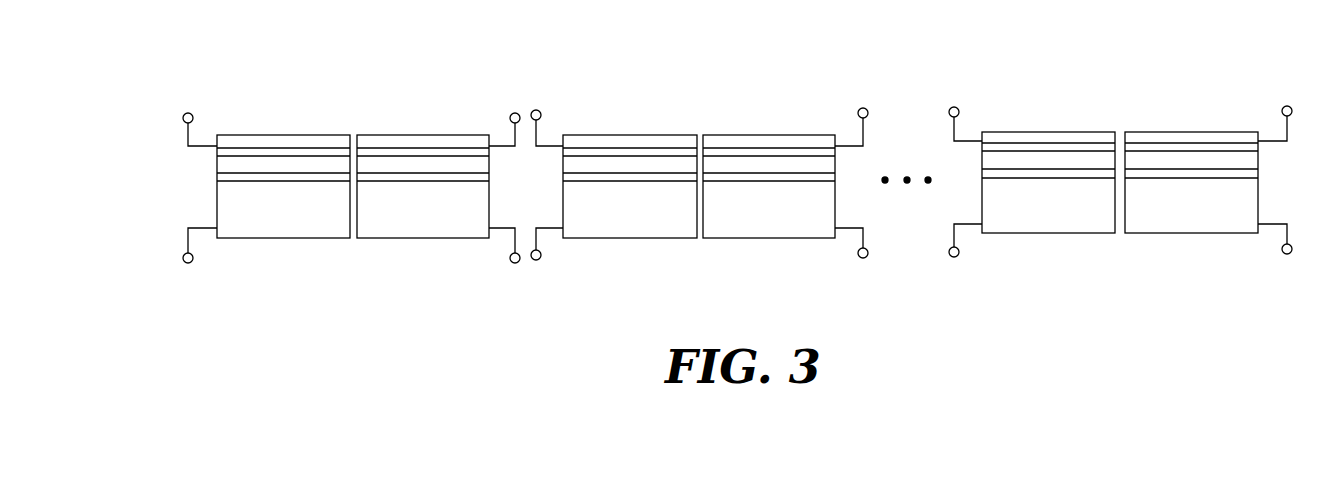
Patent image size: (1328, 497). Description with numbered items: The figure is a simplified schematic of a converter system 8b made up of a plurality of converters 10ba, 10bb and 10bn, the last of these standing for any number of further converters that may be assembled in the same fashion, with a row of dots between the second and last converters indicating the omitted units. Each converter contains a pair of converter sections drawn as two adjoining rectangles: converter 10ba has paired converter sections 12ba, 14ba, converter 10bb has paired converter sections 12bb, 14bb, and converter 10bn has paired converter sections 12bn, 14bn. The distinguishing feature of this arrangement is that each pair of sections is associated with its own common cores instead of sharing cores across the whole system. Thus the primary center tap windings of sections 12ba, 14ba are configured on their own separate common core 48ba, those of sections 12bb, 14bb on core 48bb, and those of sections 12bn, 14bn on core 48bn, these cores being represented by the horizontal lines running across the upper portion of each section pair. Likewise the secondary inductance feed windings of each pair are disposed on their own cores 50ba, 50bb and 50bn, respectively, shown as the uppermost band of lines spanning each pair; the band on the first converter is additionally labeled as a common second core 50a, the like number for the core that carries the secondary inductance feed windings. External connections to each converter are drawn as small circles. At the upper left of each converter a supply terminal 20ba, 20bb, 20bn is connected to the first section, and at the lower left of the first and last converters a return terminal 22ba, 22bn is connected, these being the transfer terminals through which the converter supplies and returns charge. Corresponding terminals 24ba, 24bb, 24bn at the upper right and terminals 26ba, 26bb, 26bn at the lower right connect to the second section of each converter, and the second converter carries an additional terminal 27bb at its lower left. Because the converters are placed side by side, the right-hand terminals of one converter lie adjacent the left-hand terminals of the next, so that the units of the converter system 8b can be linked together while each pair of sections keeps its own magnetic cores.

The converter system 8b is at (617, 37).
The converter 10ba is at (364, 74).
The converter 10bb is at (694, 82).
The converter 10bn is at (1120, 86).
The converter section 12ba is at (283, 186).
The converter section 12bb is at (630, 186).
The converter section 12bn is at (1048, 182).
The converter section 14ba is at (423, 186).
The converter section 14bb is at (769, 186).
The converter section 14bn is at (1191, 182).
The supply terminal 20ba is at (188, 113).
The supply terminal 20bb is at (540, 111).
The supply terminal 20bn is at (951, 108).
The return terminal 22ba is at (188, 263).
The return terminal 22bn is at (955, 257).
The third terminal 24ba is at (513, 113).
The third terminal 24bb is at (861, 108).
The third terminal 24bn is at (1287, 106).
The fourth terminal 26ba is at (515, 263).
The fourth terminal 26bb is at (860, 258).
The fourth terminal 26bn is at (1285, 255).
The terminal 27bb is at (540, 259).
The separate common core 48ba is at (217, 181).
The separate common core 48bb is at (835, 177).
The separate common core 48bn is at (1050, 175).
The common second core 50a is at (283, 148).
The core 50ba is at (217, 152).
The core 50bb is at (835, 152).
The core 50bn is at (1010, 147).